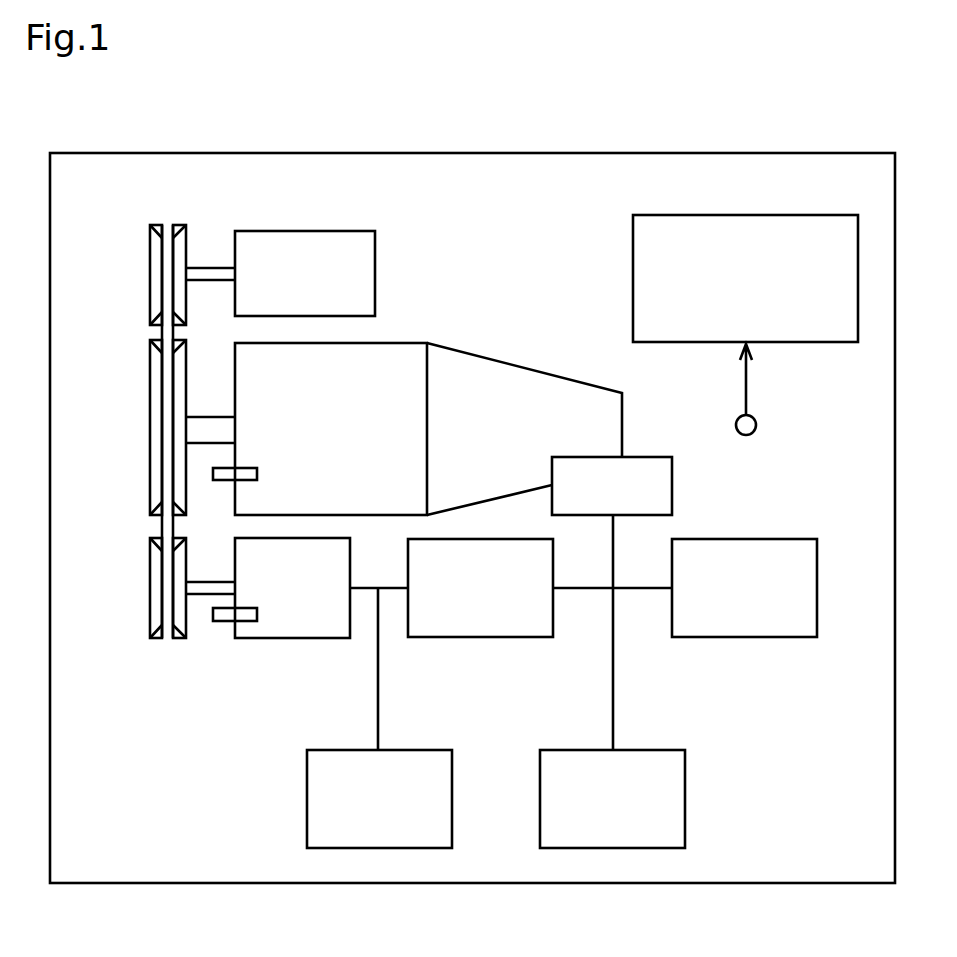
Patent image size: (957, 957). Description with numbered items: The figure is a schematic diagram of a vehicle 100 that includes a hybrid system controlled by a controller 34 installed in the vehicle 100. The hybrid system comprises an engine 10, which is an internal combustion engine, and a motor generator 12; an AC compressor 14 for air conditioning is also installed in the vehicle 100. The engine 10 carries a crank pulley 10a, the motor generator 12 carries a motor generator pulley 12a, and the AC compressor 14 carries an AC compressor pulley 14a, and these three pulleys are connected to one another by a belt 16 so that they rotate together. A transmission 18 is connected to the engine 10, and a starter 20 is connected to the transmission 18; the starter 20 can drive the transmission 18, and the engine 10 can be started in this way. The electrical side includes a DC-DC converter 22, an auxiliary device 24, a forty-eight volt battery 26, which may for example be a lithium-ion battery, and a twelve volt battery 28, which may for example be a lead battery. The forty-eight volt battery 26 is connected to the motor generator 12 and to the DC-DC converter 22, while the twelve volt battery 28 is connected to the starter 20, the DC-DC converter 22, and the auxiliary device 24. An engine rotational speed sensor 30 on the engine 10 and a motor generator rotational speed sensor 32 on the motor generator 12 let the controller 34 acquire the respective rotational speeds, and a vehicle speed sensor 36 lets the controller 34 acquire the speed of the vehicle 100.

The vehicle 100 is at (847, 153).
The engine 10 is at (400, 343).
The crank pulley 10a is at (150, 462).
The motor generator 12 is at (313, 639).
The motor generator pulley 12a is at (150, 605).
The AC compressor 14 is at (345, 231).
The AC compressor pulley 14a is at (150, 292).
The belt 16 is at (170, 224).
The transmission 18 is at (523, 367).
The starter 20 is at (645, 457).
The DC-DC converter 22 is at (515, 638).
The auxiliary device 24 is at (655, 748).
The 48V battery 26 is at (420, 748).
The 12V battery 28 is at (780, 539).
The engine rotational speed sensor 30 is at (222, 482).
The motor generator rotational speed sensor 32 is at (222, 623).
The controller 34 is at (810, 215).
The vehicle speed sensor 36 is at (757, 425).